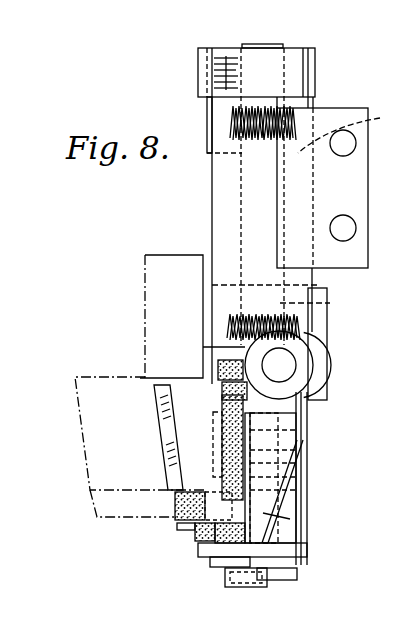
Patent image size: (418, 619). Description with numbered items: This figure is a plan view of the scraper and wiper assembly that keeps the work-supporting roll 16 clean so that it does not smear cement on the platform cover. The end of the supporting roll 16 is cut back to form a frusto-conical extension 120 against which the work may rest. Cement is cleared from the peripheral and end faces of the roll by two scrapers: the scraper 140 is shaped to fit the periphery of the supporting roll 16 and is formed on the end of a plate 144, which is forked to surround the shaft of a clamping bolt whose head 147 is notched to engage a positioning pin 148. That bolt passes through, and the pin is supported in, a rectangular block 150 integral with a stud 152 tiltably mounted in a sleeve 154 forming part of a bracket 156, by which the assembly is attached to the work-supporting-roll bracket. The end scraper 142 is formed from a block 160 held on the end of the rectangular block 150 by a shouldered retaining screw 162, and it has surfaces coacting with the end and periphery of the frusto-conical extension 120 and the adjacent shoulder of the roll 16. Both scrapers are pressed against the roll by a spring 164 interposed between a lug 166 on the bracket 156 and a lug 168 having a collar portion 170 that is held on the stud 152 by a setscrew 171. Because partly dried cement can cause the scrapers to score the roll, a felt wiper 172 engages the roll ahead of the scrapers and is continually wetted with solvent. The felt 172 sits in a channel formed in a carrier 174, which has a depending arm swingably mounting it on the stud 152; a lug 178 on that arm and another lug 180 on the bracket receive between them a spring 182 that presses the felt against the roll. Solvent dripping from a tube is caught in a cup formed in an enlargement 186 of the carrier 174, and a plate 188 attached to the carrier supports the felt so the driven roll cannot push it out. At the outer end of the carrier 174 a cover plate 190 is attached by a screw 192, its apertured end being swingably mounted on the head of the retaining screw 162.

The supporting roll 16 is at (132, 421).
The frusto-conical extension 120 is at (93, 506).
The scraper 140 is at (163, 440).
The end scraper 142 is at (177, 528).
The plate 144 is at (280, 474).
The head 147 is at (212, 438).
The positioning pin 148 is at (299, 436).
The rectangular block 150 is at (302, 500).
The stud 152 is at (263, 46).
The sleeve 154 is at (218, 191).
The bracket 156 is at (355, 200).
The block 160 is at (303, 520).
The shouldered retaining screw 162 is at (225, 574).
The spring 164 is at (318, 99).
The lug 166 is at (356, 130).
The lug 168 is at (207, 129).
The collar portion 170 is at (316, 61).
The setscrew 171 is at (221, 62).
The felt wiper 172 is at (196, 536).
The carrier 174 is at (308, 450).
The lug 178 is at (328, 316).
The lug 180 is at (214, 292).
The spring 182 is at (333, 303).
The enlargement 186 is at (300, 366).
The plate 188 is at (263, 513).
The cover plate 190 is at (308, 550).
The screw 192 is at (298, 575).